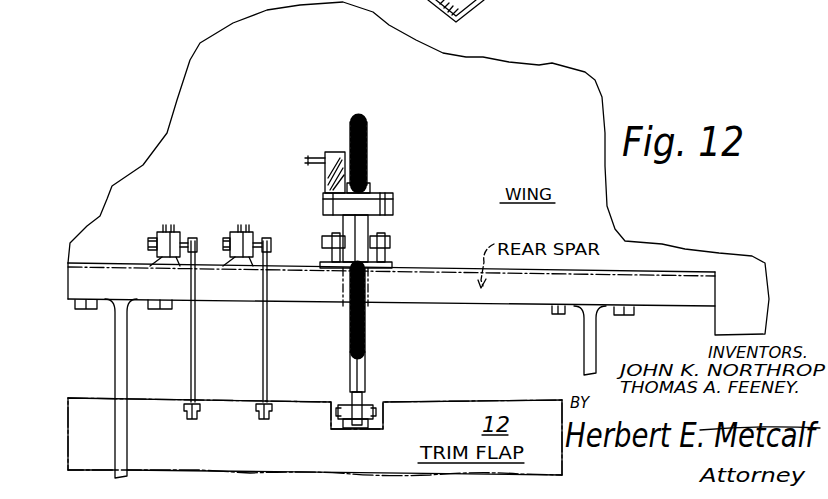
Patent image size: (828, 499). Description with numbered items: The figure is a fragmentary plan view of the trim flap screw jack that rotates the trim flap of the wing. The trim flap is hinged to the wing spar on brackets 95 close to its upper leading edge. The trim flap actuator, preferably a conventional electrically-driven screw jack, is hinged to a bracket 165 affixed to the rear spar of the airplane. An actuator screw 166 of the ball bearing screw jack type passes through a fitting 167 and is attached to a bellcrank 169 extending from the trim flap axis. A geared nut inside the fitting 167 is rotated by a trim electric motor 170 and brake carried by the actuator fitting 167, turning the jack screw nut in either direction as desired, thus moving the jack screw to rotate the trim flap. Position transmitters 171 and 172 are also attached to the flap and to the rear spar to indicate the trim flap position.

The brackets 95 is at (115, 382).
The bracket 165 is at (391, 246).
The actuator screw 166 is at (366, 152).
The fitting 167 is at (393, 200).
The bellcrank 169 is at (361, 399).
The trim electric motor 170 is at (323, 160).
The position transmitter 171 is at (233, 236).
The position transmitter 172 is at (150, 240).